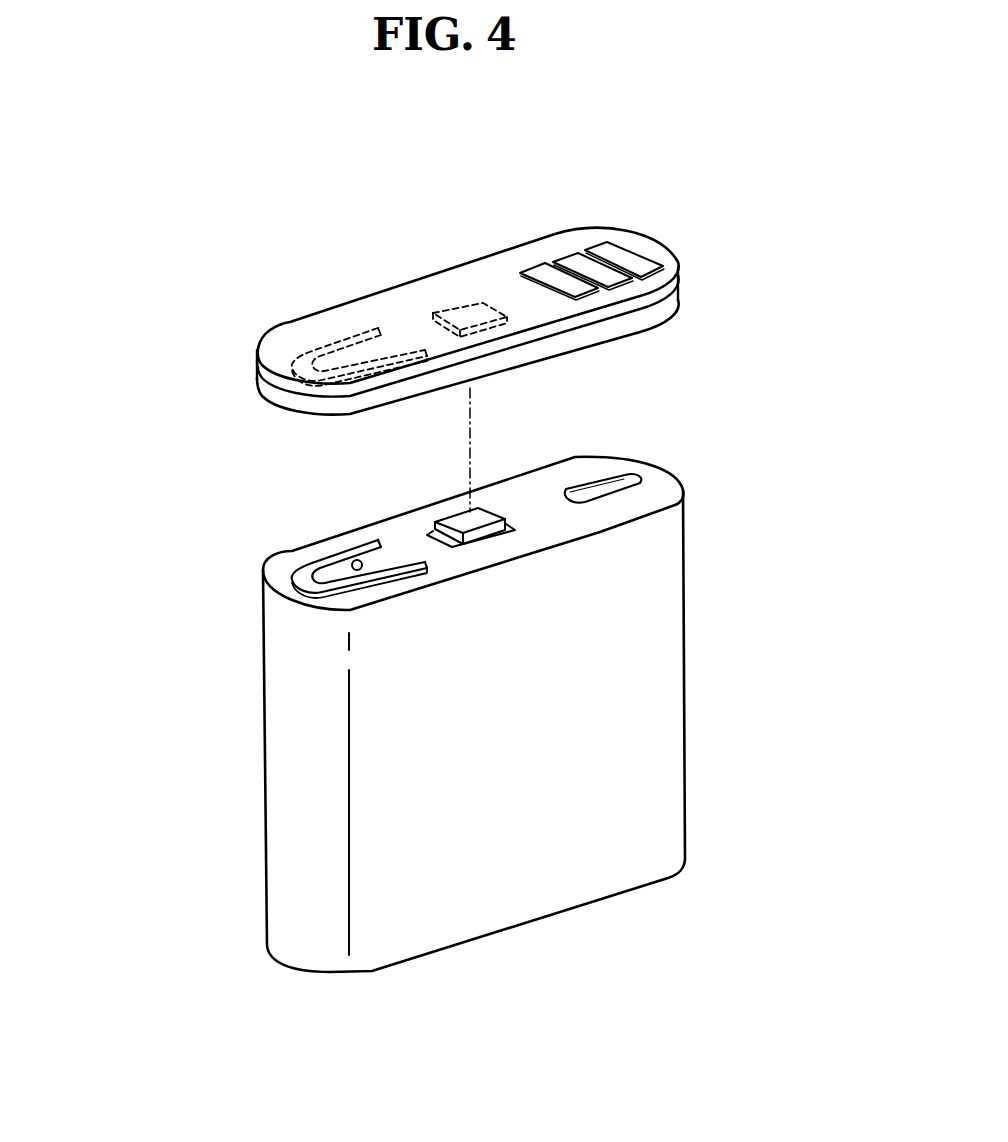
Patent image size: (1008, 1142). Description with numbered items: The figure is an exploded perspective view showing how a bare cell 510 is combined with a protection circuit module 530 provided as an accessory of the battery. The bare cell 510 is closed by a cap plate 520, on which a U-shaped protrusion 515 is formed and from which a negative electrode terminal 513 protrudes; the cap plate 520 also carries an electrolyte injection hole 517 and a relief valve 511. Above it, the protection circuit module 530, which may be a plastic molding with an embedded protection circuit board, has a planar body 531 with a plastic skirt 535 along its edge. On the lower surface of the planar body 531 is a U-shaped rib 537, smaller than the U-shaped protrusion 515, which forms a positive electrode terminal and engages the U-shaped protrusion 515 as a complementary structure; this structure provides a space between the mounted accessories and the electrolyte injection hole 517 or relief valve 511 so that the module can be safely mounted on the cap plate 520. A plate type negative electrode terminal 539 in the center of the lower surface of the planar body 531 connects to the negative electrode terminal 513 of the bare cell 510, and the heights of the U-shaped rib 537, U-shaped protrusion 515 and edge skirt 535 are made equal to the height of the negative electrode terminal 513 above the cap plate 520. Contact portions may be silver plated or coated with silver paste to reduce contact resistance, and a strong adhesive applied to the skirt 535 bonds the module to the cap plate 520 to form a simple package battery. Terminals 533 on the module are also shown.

The bare cell 510 is at (726, 623).
The relief valve 511 is at (600, 487).
The negative electrode terminal 513 is at (460, 522).
The U-shaped protrusion 515 is at (306, 567).
The electrolyte injection hole 517 is at (357, 562).
The cap plate 520 is at (655, 495).
The protection circuit module 530 is at (195, 295).
The planar body 531 is at (630, 288).
The terminals 533 is at (605, 247).
The plastic skirt 535 is at (625, 330).
The U-shaped rib 537 is at (340, 337).
The negative electrode terminal 539 is at (460, 315).